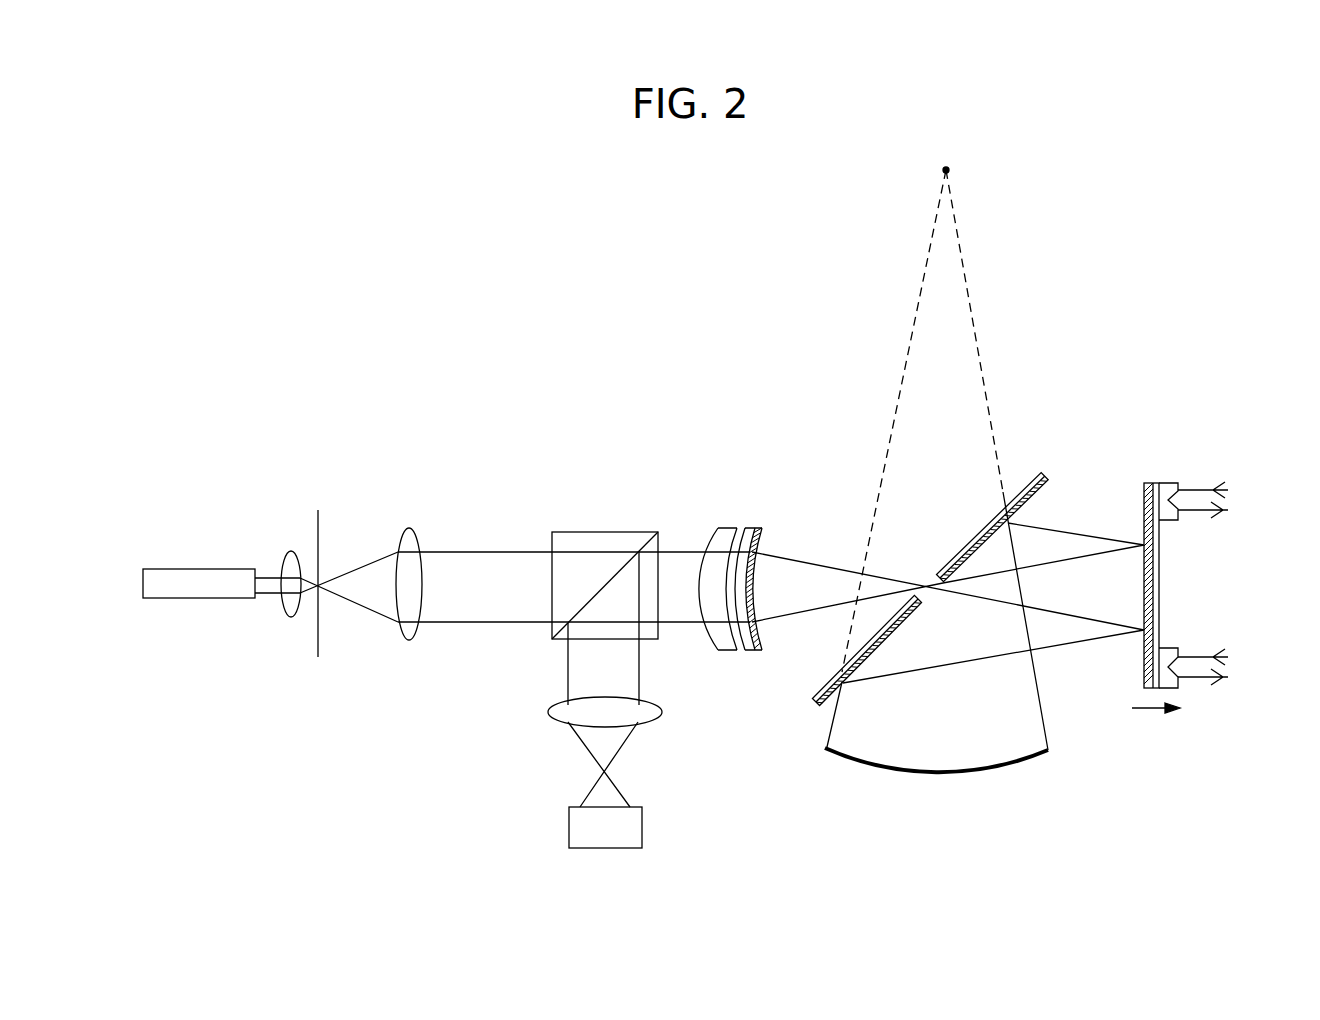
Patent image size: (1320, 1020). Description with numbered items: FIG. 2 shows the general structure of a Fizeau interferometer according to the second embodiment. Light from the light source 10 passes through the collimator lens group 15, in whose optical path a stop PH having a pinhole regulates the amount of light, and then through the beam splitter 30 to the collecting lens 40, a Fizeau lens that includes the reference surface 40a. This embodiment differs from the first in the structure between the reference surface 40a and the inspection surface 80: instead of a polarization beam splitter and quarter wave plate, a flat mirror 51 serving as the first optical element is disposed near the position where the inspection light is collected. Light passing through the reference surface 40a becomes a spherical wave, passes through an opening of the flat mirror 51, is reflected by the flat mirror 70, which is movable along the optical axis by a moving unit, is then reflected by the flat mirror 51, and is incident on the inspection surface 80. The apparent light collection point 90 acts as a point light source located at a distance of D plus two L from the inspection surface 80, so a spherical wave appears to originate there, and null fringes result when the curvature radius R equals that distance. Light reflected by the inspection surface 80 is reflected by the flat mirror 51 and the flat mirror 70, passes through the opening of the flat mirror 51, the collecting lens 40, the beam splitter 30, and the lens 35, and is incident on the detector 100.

The light source 10 is at (163, 568).
The collimator lens group 15 is at (273, 462).
The beam splitter 30 is at (615, 532).
The lens 35 is at (546, 712).
The collecting lens 40 is at (742, 529).
The reference surface 40a is at (762, 554).
The flat mirror 51 is at (1047, 478).
The flat mirror 70 is at (1153, 483).
The inspection surface 80 is at (1003, 770).
The apparent light collection point 90 is at (946, 170).
The detector 100 is at (628, 833).